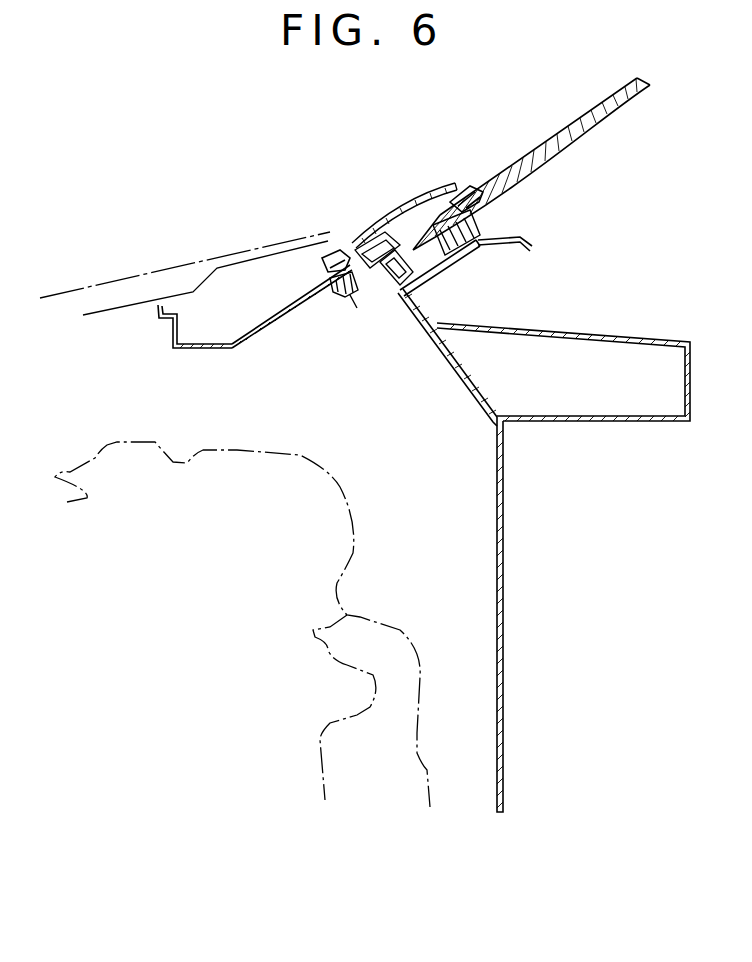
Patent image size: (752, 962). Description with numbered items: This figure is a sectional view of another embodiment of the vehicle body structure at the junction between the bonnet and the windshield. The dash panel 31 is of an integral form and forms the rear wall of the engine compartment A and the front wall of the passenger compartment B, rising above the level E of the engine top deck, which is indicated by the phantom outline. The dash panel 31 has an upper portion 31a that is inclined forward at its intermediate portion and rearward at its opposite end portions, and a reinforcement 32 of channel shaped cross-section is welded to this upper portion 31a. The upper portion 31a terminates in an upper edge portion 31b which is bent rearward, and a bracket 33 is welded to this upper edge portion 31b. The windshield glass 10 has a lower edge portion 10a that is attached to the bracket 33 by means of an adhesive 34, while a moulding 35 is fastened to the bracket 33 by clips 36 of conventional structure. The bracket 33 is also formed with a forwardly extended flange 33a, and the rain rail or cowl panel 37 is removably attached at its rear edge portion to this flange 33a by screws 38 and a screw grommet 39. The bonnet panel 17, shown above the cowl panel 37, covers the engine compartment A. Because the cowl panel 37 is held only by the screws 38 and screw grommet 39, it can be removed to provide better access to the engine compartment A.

The windshield glass 10 is at (605, 100).
The lower edge portion 10a is at (443, 220).
The bonnet panel 17 is at (150, 267).
The dash panel 31 is at (527, 557).
The upper portion 31a is at (447, 360).
The upper edge portion 31b is at (458, 250).
The reinforcement 32 is at (618, 338).
The bracket 33 is at (385, 280).
The flange 33a is at (320, 290).
The adhesive 34 is at (472, 237).
The moulding 35 is at (400, 224).
The clips 36 is at (393, 232).
The cowl panel 37 is at (198, 352).
The screws 38 is at (345, 254).
The screw grommet 39 is at (338, 300).
The level of the engine top deck E is at (352, 492).
The engine compartment A is at (453, 728).
The passenger compartment B is at (545, 703).